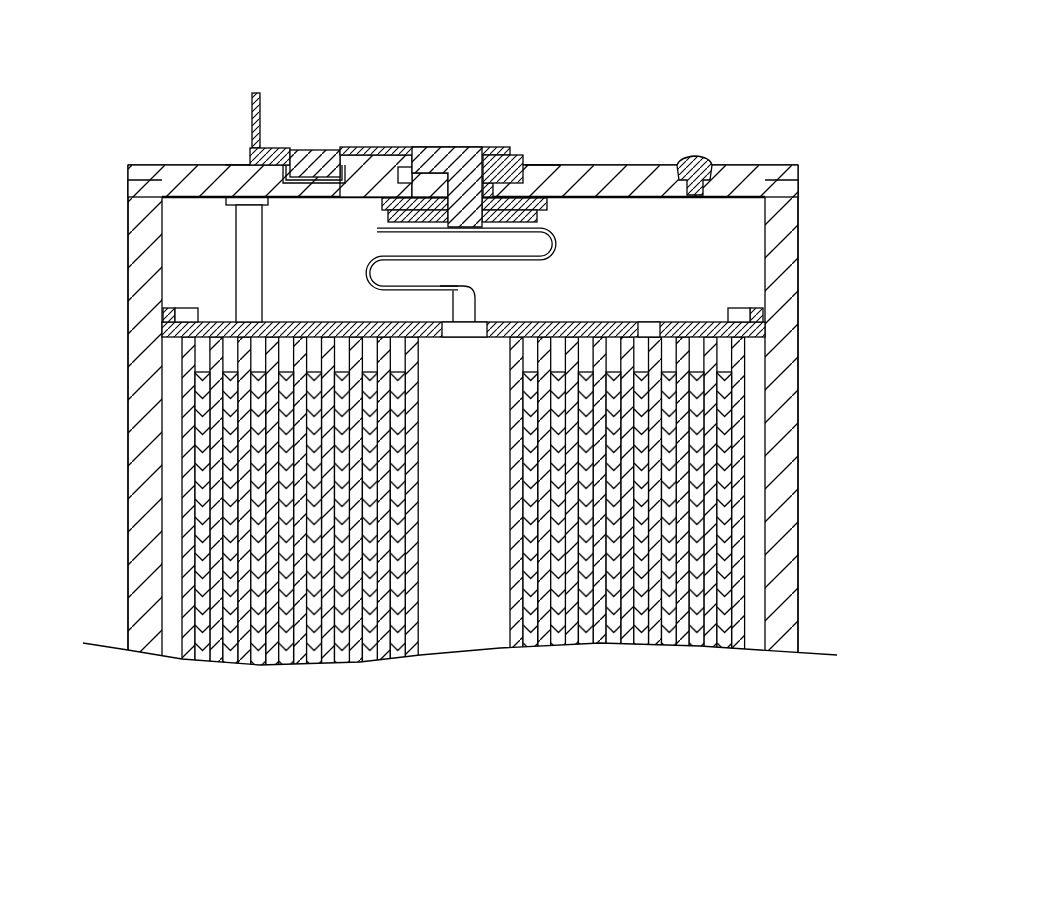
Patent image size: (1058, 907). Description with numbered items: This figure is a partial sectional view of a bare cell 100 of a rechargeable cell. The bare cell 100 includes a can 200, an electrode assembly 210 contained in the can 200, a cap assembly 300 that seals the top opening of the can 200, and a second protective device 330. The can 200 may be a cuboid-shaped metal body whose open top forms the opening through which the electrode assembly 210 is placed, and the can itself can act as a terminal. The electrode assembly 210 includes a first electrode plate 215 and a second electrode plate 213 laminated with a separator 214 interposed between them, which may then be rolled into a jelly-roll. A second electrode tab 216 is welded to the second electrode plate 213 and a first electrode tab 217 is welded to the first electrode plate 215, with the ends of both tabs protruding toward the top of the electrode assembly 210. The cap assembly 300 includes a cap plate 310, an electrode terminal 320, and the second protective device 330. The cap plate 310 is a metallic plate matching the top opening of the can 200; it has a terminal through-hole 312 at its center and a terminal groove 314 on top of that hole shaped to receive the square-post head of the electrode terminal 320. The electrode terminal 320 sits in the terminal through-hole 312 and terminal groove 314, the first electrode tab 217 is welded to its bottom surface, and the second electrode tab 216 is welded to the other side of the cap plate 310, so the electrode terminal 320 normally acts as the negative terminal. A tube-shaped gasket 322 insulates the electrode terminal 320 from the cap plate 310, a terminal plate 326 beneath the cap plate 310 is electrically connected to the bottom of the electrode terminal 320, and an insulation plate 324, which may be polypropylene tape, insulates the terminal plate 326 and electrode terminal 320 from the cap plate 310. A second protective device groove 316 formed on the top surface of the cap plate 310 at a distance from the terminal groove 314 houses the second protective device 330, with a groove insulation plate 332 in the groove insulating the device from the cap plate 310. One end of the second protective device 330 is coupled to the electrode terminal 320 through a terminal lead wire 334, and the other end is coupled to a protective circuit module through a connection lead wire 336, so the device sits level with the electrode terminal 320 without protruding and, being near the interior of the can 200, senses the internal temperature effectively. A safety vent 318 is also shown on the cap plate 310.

The bare cell 100 is at (818, 182).
The can 200 is at (788, 517).
The electrode assembly 210 is at (752, 424).
The second electrode plate 213 is at (722, 645).
The separator 214 is at (738, 645).
The first electrode plate 215 is at (697, 645).
The second electrode tab 216 is at (253, 254).
The first electrode tab 217 is at (555, 243).
The cap assembly 300 is at (655, 130).
The cap plate 310 is at (183, 167).
The terminal through-hole 312 is at (550, 167).
The terminal groove 314 is at (543, 167).
The second protective device groove 316 is at (243, 168).
The safety vent 318 is at (693, 160).
The electrode terminal 320 is at (480, 153).
The gasket 322 is at (518, 165).
The insulation plate 324 is at (423, 152).
The terminal plate 326 is at (383, 213).
The second protective device 330 is at (303, 147).
The groove insulation plate 332 is at (362, 148).
The terminal lead wire 334 is at (393, 147).
The connection lead wire 336 is at (258, 108).